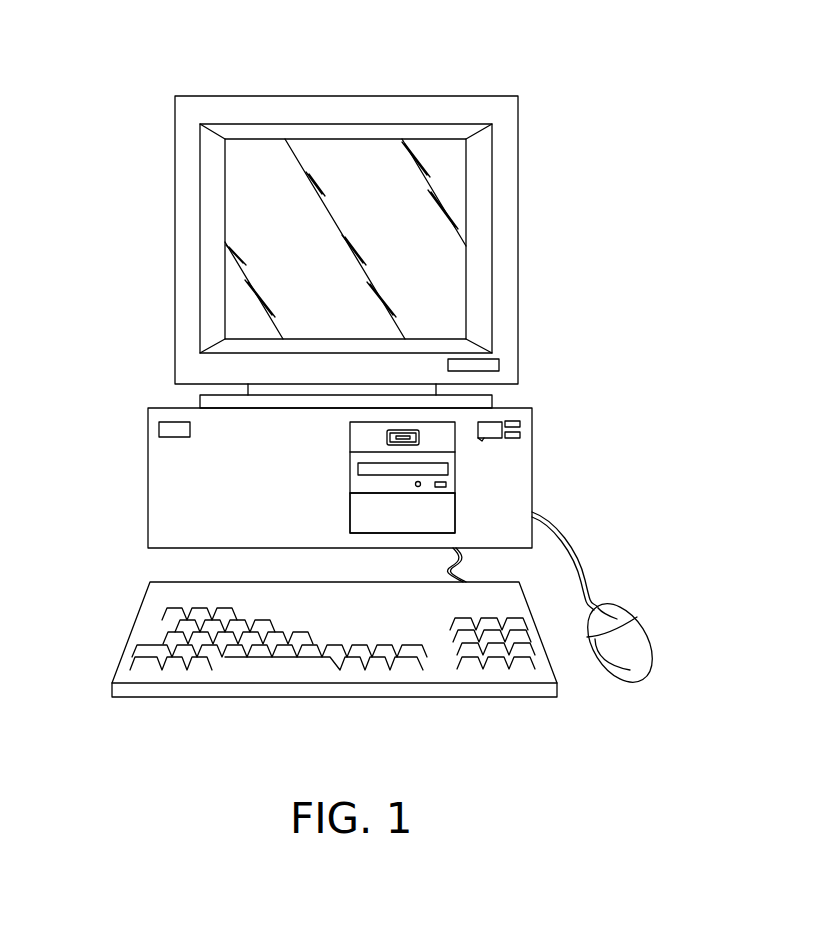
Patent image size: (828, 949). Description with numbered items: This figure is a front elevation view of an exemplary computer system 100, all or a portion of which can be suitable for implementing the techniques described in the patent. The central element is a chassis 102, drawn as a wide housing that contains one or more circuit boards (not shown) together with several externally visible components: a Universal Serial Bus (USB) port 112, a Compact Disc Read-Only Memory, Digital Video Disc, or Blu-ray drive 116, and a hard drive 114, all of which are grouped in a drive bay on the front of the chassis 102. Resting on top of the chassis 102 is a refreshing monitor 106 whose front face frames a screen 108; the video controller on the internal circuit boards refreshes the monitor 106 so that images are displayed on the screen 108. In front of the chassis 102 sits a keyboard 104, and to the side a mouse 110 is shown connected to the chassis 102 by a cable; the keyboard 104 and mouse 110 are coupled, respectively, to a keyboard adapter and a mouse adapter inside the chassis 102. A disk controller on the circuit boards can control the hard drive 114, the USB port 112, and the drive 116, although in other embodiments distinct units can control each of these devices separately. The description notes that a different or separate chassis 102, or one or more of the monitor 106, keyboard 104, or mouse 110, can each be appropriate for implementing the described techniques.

The computer system 100 is at (511, 73).
The chassis 102 is at (148, 480).
The keyboard 104 is at (134, 623).
The refreshing monitor 106 is at (243, 97).
The screen 108 is at (270, 243).
The mouse 110 is at (636, 630).
The Universal Serial Bus (USB) port 112 is at (423, 433).
The hard drive 114 is at (447, 513).
The CD-ROM, DVD, or Blu-ray drive 116 is at (450, 477).